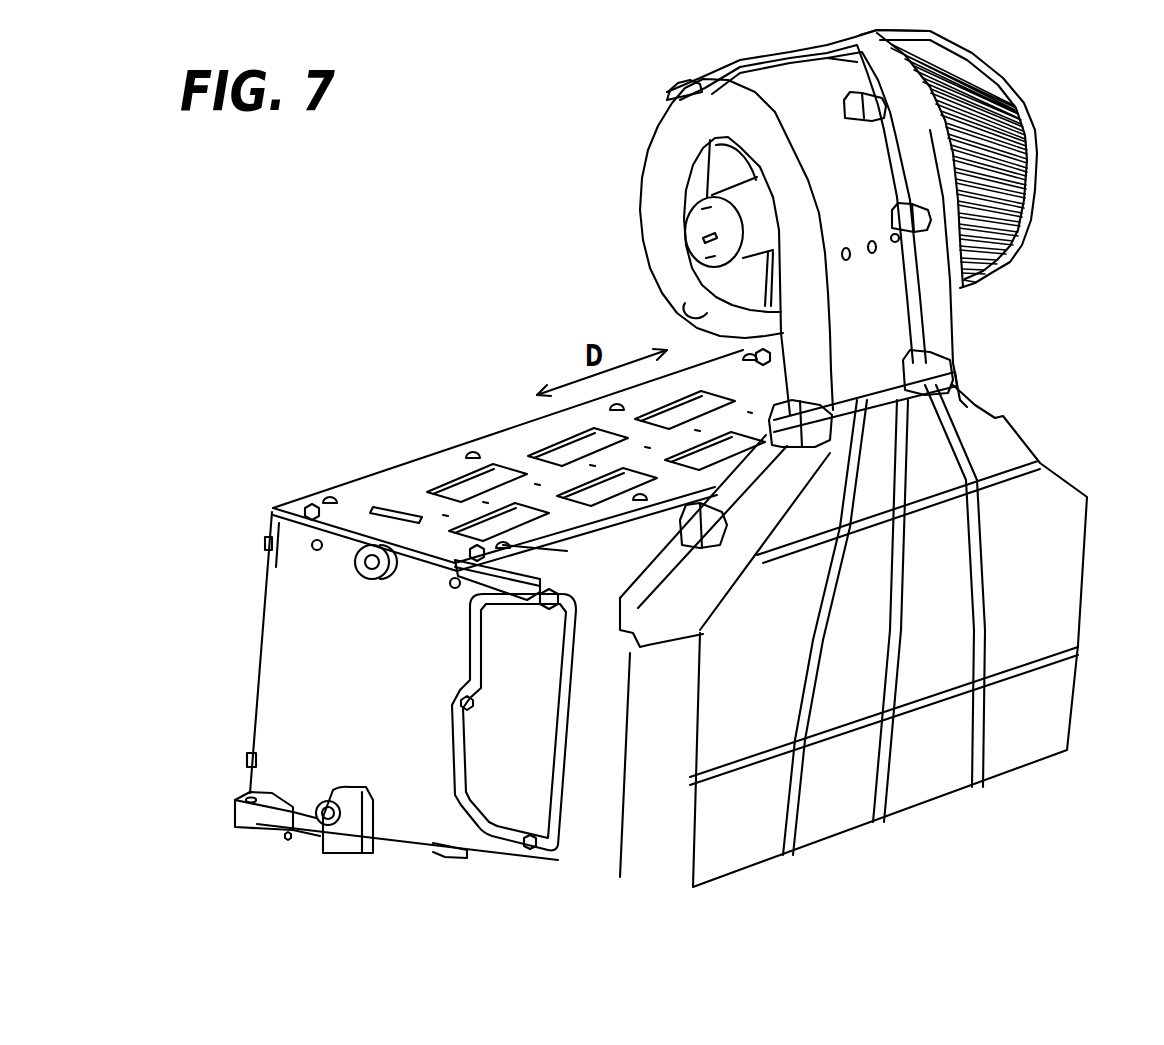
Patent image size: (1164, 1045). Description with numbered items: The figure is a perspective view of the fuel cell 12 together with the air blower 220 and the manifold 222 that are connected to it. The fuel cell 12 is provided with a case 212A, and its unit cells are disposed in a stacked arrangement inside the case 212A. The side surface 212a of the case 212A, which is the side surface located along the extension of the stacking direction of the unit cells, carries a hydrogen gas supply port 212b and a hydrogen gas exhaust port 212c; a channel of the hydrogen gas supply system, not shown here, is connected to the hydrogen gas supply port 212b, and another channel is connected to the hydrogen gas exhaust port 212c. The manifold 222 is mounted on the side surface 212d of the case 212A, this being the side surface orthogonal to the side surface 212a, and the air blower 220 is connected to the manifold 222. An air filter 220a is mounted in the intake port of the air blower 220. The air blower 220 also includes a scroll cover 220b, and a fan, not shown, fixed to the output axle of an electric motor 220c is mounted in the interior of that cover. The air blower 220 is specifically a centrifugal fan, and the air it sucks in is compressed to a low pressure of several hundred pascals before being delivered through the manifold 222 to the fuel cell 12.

The fuel cell 12 is at (495, 596).
The case 212A is at (521, 454).
The side surface 212a is at (356, 574).
The hydrogen gas supply port 212b is at (317, 855).
The hydrogen gas exhaust port 212c is at (323, 501).
The side surface 212d is at (576, 741).
The air blower 220 is at (836, 238).
The air filter 220a is at (1008, 159).
The scroll cover 220b is at (674, 244).
The electric motor 220c is at (635, 232).
The manifold 222 is at (874, 636).